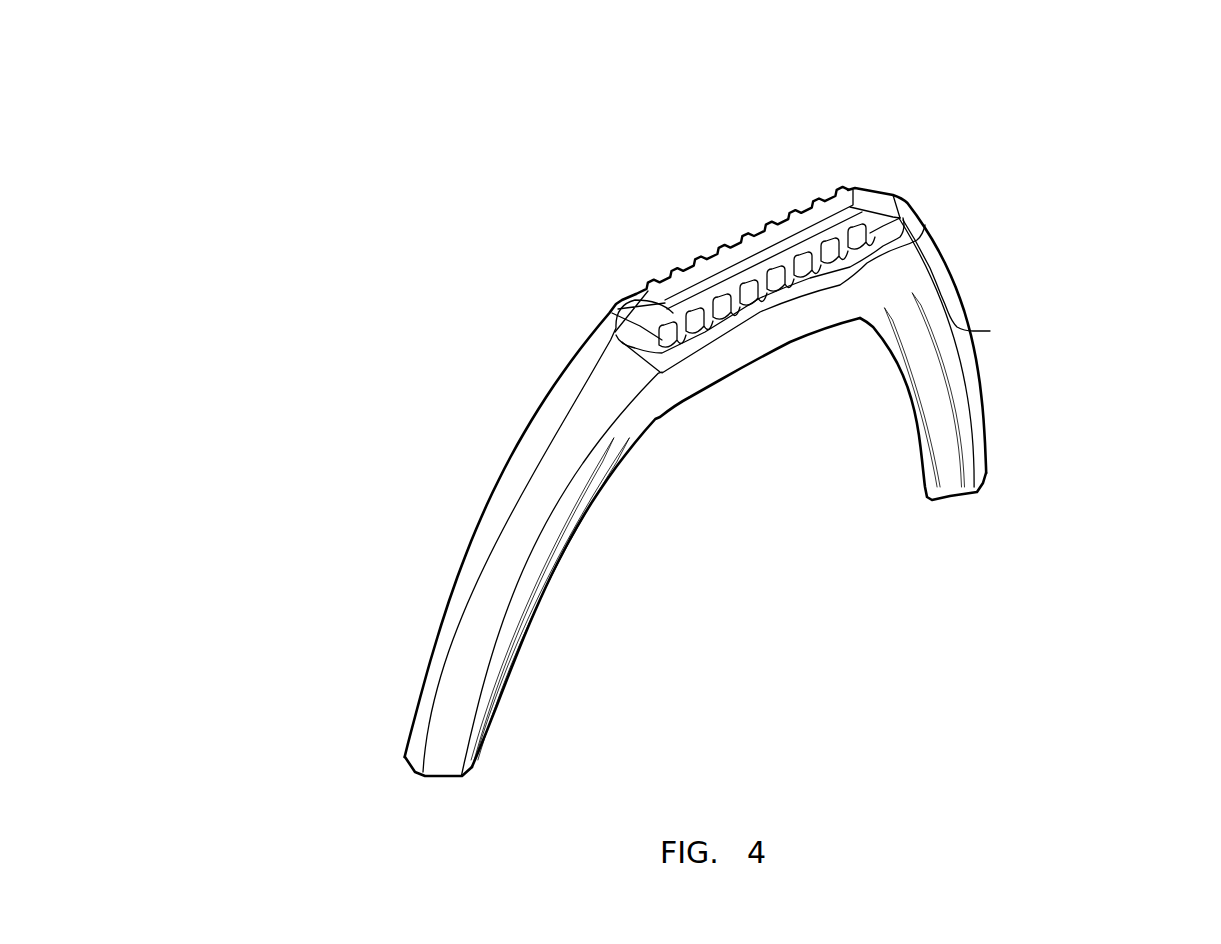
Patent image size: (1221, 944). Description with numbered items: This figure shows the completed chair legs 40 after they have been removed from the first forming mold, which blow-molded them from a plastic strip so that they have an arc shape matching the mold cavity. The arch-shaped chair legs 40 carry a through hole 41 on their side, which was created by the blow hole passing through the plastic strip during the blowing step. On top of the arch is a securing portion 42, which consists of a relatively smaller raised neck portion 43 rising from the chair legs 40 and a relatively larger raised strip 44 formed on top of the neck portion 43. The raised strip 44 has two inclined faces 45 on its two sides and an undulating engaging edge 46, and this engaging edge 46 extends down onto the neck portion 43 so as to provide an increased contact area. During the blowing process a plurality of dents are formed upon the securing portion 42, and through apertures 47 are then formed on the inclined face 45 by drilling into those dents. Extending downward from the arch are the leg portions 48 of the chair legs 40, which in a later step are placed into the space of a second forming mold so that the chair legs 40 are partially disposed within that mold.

The chair legs 40 is at (465, 513).
The through hole 41 is at (667, 401).
The securing portion 42 is at (870, 188).
The neck portion 43 is at (990, 331).
The raised strip 44 is at (900, 218).
The inclined faces 45 is at (780, 237).
The engaging edge 46 is at (613, 310).
The through apertures 47 is at (687, 270).
The leg portions 48 is at (948, 443).